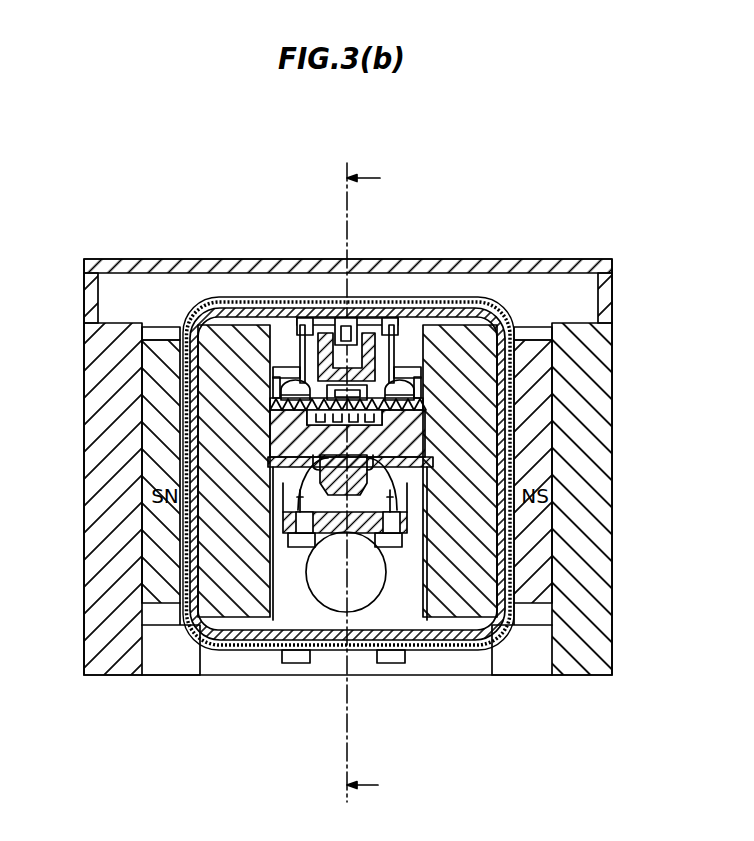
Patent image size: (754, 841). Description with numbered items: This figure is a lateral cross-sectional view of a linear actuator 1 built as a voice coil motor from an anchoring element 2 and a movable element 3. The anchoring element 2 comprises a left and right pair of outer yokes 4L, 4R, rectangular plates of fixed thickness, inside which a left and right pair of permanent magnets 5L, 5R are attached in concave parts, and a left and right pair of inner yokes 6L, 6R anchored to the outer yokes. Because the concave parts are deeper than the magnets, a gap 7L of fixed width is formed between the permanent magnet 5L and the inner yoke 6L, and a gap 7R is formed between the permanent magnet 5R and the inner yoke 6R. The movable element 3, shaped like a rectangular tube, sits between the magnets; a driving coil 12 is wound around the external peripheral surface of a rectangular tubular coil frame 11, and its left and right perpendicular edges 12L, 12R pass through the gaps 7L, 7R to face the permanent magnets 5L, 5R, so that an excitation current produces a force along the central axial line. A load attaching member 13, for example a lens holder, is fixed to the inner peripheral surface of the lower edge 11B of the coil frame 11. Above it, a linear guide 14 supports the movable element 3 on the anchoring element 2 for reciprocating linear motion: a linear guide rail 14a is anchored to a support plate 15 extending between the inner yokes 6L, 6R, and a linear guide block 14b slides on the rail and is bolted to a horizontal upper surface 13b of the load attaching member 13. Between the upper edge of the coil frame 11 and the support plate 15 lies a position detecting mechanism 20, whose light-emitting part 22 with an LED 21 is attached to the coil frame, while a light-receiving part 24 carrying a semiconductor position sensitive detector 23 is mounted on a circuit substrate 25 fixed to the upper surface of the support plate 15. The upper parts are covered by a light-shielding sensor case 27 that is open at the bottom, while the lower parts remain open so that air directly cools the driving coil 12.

The linear actuator 1 is at (553, 226).
The anchoring element 2 is at (620, 460).
The movable element 3 is at (399, 294).
The right outer yoke 4R is at (105, 607).
The left outer yoke 4L is at (596, 602).
The right permanent magnet 5R is at (163, 590).
The left permanent magnet 5L is at (530, 592).
The right inner yoke 6R is at (250, 606).
The left inner yoke 6L is at (457, 610).
The right gap 7R is at (180, 407).
The left gap 7L is at (515, 380).
The coil frame 11 is at (503, 331).
The lower edge of coil frame 11B is at (352, 650).
The driving coil 12 is at (500, 308).
The right perpendicular edge of driving coil 12R is at (186, 432).
The left perpendicular edge of driving coil 12L is at (500, 440).
The load attaching member 13 is at (298, 616).
The horizontal upper surface 13b is at (290, 478).
The linear guide 14 is at (698, 484).
The linear guide rail 14a is at (376, 457).
The linear guide block 14b is at (386, 470).
The support plate 15 is at (280, 442).
The position detecting mechanism 20 is at (289, 350).
The LED 21 is at (352, 333).
The light-emitting part 22 is at (309, 338).
The semiconductor position sensitive detector (PSD) 23 is at (363, 352).
The light-receiving part 24 is at (399, 377).
The circuit substrate 25 is at (279, 404).
The light-shielding sensor case 27 is at (148, 262).